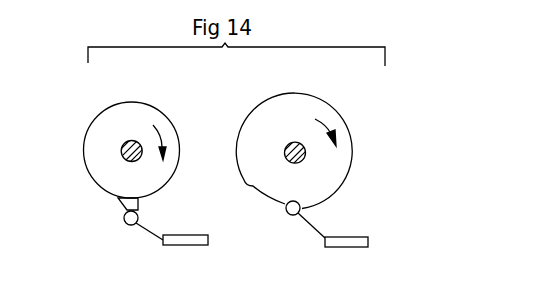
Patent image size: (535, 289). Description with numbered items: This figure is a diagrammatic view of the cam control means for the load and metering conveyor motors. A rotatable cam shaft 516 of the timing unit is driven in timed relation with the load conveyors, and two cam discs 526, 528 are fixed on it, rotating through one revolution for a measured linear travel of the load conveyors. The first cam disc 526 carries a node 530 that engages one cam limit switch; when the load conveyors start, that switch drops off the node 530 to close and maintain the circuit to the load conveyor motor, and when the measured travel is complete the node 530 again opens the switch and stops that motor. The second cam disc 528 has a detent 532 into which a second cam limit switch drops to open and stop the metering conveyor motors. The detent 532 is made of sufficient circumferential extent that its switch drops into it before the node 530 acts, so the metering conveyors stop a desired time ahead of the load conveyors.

The cam shaft 516 is at (133, 141).
The cam disc 526 is at (105, 108).
The cam disc 528 is at (352, 140).
The node 530 is at (120, 204).
The detent 532 is at (277, 198).